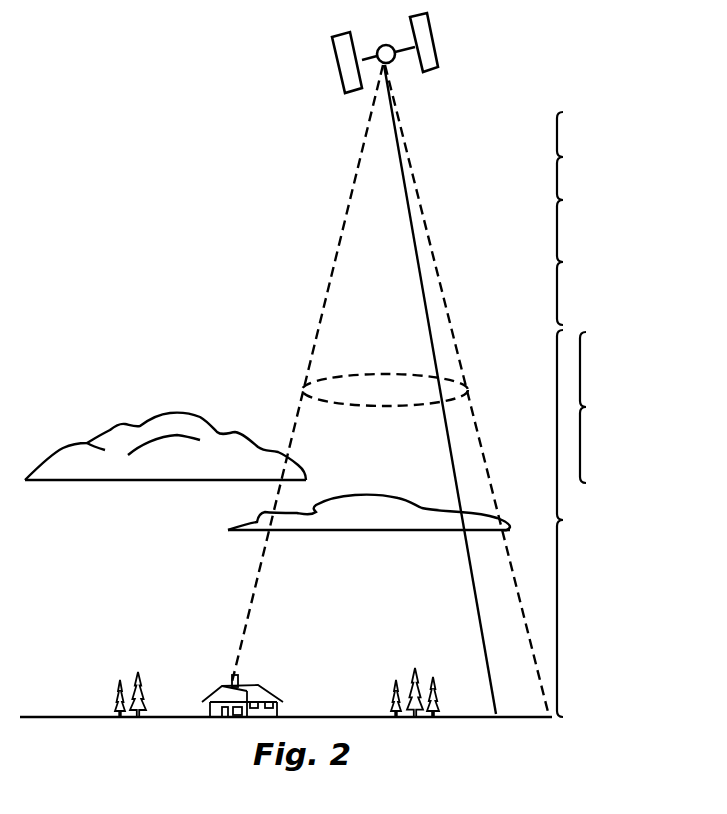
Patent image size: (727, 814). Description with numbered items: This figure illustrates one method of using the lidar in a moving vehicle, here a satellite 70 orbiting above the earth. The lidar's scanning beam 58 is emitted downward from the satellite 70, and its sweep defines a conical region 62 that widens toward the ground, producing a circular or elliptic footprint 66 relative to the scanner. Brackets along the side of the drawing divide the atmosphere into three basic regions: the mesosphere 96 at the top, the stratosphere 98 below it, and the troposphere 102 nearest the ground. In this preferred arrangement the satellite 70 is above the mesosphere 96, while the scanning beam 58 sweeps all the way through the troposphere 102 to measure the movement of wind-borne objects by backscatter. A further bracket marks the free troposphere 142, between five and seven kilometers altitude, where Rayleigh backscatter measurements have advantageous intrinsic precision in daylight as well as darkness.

The satellite 70 is at (438, 48).
The scanning beam 58 is at (413, 237).
The conical region 62 is at (373, 212).
The footprint 66 is at (340, 406).
The mesosphere 96 is at (578, 156).
The stratosphere 98 is at (578, 262).
The troposphere 102 is at (585, 523).
The free troposphere 142 is at (609, 407).